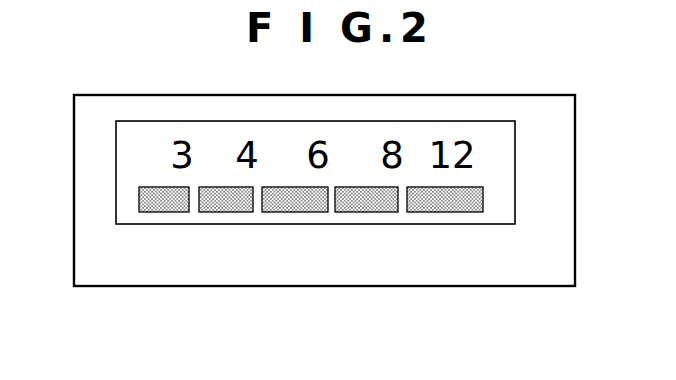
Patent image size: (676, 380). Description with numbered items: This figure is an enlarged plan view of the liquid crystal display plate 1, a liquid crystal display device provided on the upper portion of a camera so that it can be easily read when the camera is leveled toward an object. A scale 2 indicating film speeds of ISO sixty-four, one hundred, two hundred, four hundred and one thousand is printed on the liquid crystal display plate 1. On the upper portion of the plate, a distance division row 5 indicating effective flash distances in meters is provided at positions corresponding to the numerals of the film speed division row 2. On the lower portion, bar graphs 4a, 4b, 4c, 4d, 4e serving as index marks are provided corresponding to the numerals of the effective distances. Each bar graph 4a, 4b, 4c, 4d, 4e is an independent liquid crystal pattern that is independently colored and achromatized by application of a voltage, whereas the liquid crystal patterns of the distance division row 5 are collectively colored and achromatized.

The liquid crystal display plate 1 is at (508, 133).
The scale 2 is at (468, 253).
The bar graph 4a is at (139, 200).
The bar graph 4b is at (208, 212).
The bar graph 4c is at (280, 212).
The bar graph 4d is at (350, 212).
The bar graph 4e is at (422, 212).
The distance division row 5 is at (139, 155).